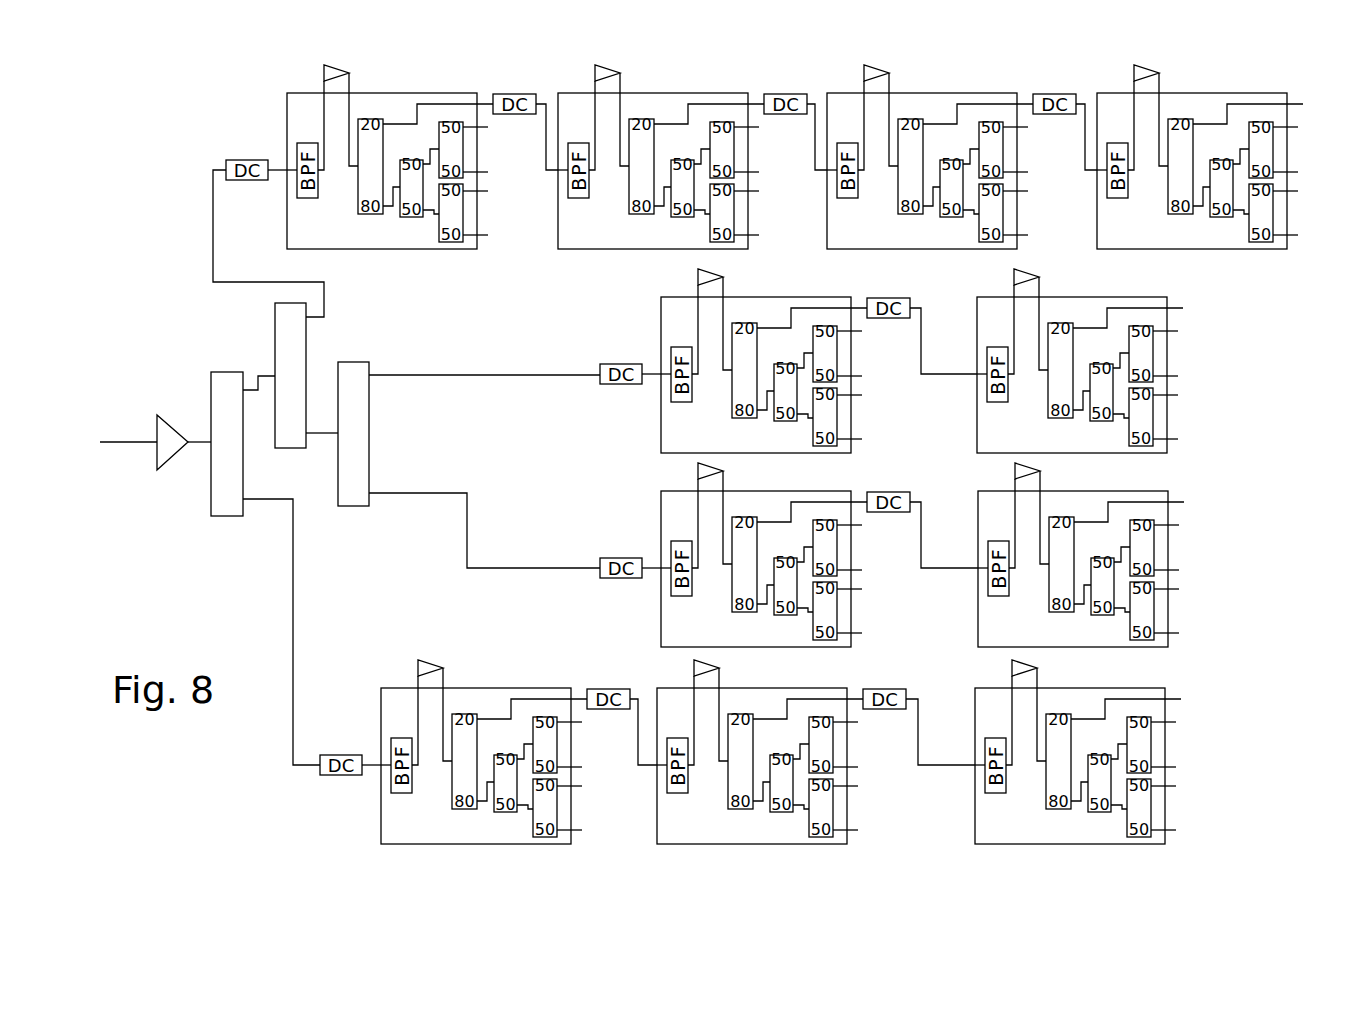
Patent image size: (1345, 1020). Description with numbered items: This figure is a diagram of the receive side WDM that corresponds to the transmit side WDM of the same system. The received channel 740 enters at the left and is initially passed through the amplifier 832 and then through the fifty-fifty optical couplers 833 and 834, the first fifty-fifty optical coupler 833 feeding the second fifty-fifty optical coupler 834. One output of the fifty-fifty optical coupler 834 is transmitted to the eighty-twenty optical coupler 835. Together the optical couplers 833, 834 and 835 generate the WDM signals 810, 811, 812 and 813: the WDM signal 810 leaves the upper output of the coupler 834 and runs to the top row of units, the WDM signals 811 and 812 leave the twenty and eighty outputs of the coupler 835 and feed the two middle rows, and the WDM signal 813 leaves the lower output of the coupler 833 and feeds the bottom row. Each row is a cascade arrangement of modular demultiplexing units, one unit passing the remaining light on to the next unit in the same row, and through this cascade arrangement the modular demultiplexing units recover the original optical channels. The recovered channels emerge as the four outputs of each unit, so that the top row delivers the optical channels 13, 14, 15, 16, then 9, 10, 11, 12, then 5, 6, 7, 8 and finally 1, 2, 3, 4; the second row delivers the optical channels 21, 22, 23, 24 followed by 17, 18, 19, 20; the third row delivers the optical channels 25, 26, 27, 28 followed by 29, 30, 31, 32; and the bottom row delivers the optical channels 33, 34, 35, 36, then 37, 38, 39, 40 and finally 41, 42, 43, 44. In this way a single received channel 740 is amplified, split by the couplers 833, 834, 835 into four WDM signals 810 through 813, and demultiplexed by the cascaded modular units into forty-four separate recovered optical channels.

The output port 1 is at (1291, 127).
The output port 2 is at (1291, 172).
The output port 3 is at (1291, 191).
The output port 4 is at (1291, 235).
The output port 5 is at (1021, 127).
The output port 6 is at (1021, 172).
The output port 7 is at (1021, 191).
The output port 8 is at (1021, 235).
The output port 9 is at (752, 127).
The output port 10 is at (757, 172).
The output port 11 is at (757, 191).
The output port 12 is at (757, 235).
The output port 13 is at (486, 127).
The output port 14 is at (486, 172).
The output port 15 is at (486, 191).
The output port 16 is at (486, 235).
The output port 17 is at (1176, 331).
The output port 18 is at (1176, 376).
The output port 19 is at (1176, 395).
The output port 20 is at (1176, 439).
The output port 21 is at (860, 331).
The output port 22 is at (860, 376).
The output port 23 is at (860, 395).
The output port 24 is at (860, 439).
The output port 25 is at (860, 525).
The output port 26 is at (860, 570).
The output port 27 is at (860, 589).
The output port 28 is at (860, 633).
The output port 29 is at (1177, 525).
The output port 30 is at (1177, 570).
The output port 31 is at (1177, 589).
The output port 32 is at (1177, 633).
The output port 33 is at (580, 722).
The output port 34 is at (580, 767).
The output port 35 is at (580, 786).
The output port 36 is at (580, 830).
The output port 37 is at (856, 722).
The output port 38 is at (856, 767).
The output port 39 is at (856, 786).
The output port 40 is at (856, 830).
The output port 41 is at (1174, 722).
The output port 42 is at (1174, 767).
The output port 43 is at (1174, 786).
The output port 44 is at (1174, 830).
The received channel 740 is at (123, 442).
The WDM signal 810 is at (258, 272).
The WDM signal 811 is at (420, 375).
The WDM signal 812 is at (420, 493).
The WDM signal 813 is at (293, 672).
The amplifier 832 is at (174, 412).
The 50/50 optical coupler 833 is at (222, 372).
The 50/50 optical coupler 834 is at (275, 305).
The 80/20 optical coupler 835 is at (340, 362).